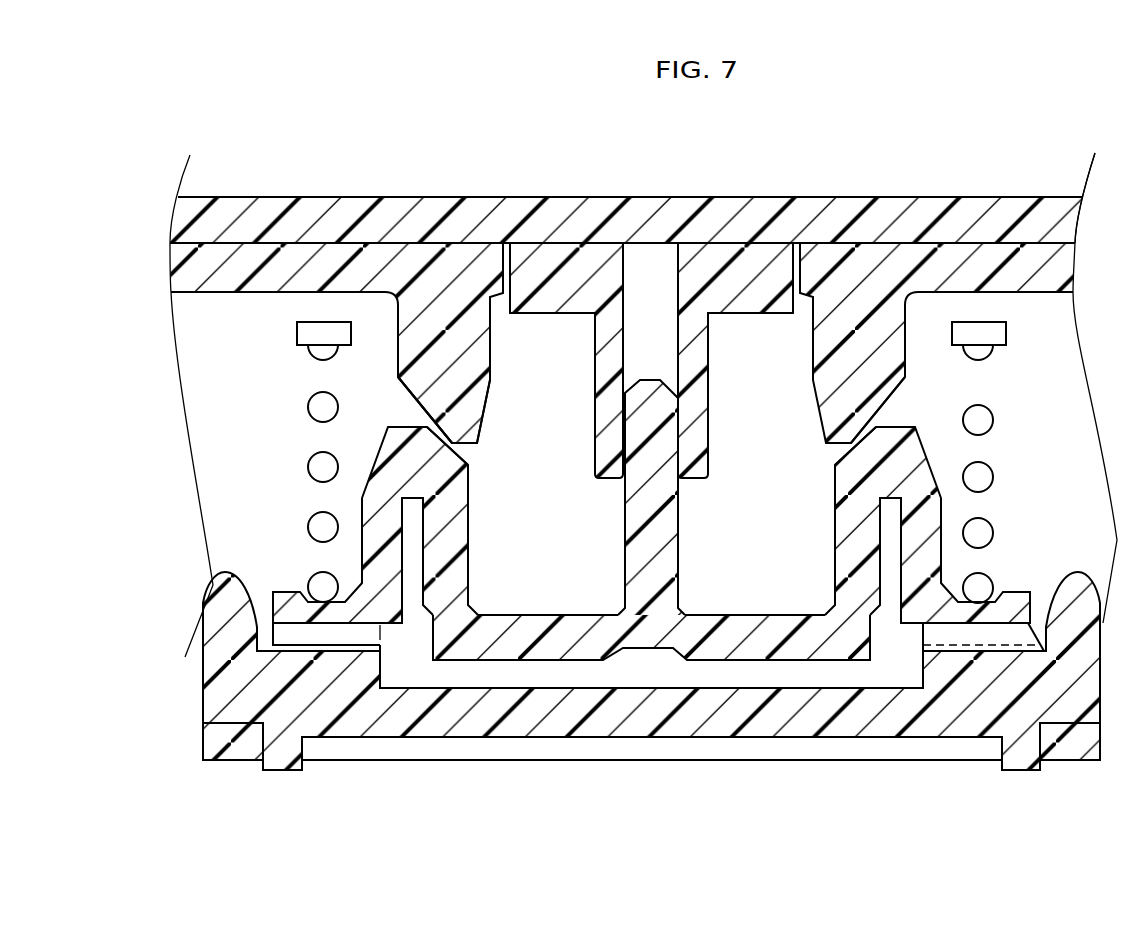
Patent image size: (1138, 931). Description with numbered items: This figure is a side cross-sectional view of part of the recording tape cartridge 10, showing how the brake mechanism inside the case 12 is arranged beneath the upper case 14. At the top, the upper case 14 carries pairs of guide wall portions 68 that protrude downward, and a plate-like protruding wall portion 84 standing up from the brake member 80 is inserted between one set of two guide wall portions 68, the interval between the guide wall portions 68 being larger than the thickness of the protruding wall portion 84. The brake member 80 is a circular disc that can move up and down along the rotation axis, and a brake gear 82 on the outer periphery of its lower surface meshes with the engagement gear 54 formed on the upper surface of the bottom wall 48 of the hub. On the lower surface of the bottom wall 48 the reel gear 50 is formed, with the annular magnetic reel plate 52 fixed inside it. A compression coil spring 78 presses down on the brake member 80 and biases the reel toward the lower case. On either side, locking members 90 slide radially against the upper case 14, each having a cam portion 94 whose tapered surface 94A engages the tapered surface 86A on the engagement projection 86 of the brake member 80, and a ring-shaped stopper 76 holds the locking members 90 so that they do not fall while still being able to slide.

The recording tape cartridge 10 is at (985, 168).
The case 12 is at (730, 197).
The upper case 14 is at (320, 197).
The bottom wall 48 is at (567, 673).
The reel gear 50 is at (232, 750).
The reel plate 52 is at (375, 760).
The engagement gear 54 is at (997, 635).
The guide wall portions 68 is at (595, 372).
The stopper 76 is at (1006, 338).
The compression coil spring 78 is at (308, 520).
The brake member 80 is at (545, 612).
The brake gear 82 is at (912, 630).
The protruding wall portion 84 is at (679, 530).
The engagement projection 86 is at (469, 530).
The tapered surface 86A is at (468, 458).
The locking member 90 is at (232, 296).
The cam portion 94 is at (488, 418).
The tapered surface 94A is at (413, 398).